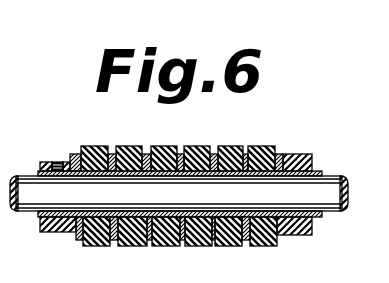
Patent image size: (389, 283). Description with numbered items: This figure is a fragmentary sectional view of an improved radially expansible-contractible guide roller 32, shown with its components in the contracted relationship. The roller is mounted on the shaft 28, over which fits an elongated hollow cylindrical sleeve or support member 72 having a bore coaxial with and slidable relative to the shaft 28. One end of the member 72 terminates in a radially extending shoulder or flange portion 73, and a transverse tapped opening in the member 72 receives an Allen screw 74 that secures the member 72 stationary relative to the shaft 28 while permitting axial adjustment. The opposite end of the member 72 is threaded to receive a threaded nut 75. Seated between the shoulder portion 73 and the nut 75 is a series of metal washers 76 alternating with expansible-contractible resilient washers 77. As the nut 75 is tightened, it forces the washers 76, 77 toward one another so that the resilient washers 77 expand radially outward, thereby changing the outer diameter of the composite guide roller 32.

The shaft 28 is at (323, 190).
The resilient guide roller 32 is at (270, 143).
The hollow cylindrical sleeve or support member 72 is at (159, 150).
The shoulder or flange portion 73 is at (42, 166).
The Allen screw 74 is at (57, 165).
The threaded nut 75 is at (308, 156).
The metal washers 76 is at (213, 248).
The resilient washers 77 is at (155, 248).